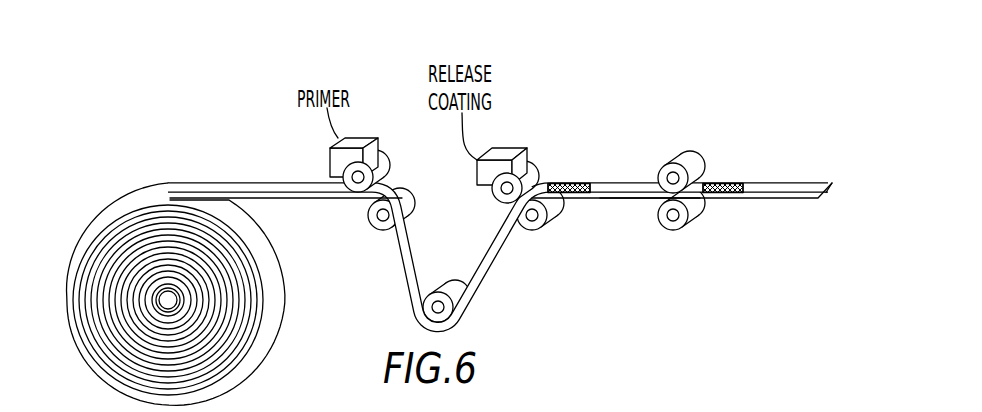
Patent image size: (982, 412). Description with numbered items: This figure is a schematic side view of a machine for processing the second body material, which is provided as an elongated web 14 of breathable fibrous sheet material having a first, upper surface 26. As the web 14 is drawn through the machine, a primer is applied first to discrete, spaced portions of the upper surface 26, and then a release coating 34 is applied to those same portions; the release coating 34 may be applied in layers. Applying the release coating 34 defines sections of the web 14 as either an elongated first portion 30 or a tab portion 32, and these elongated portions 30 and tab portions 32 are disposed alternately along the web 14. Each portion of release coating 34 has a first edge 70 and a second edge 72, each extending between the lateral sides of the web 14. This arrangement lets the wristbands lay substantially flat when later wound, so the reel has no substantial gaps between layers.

The elongated web of second body material 14 is at (102, 232).
The first upper surface 26 is at (258, 184).
The elongated first portion 30 is at (642, 188).
The tab portion 32 is at (727, 187).
The release coating 34 is at (566, 185).
The first edge 70 is at (556, 184).
The second edge 72 is at (587, 185).